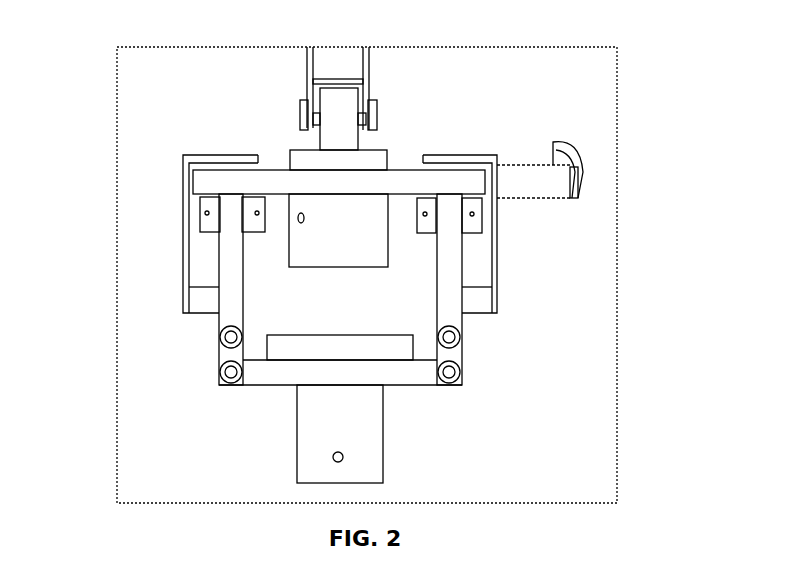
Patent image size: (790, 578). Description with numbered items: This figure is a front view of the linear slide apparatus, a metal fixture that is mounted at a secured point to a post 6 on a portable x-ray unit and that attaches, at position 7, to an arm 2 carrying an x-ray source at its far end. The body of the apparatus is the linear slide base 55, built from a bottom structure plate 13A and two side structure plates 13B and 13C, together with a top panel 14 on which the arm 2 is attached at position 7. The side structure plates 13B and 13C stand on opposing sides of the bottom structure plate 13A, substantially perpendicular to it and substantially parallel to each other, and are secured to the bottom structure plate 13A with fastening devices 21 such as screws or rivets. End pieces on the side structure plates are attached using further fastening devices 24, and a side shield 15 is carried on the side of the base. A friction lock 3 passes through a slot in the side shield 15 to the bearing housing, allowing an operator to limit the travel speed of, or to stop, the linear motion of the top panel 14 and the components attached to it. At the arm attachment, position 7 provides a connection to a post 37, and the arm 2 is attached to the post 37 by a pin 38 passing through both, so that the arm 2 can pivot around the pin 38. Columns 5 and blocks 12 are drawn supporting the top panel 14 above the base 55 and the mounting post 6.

The arm 2 is at (300, 67).
The friction lock 3 is at (593, 176).
The support column 5 is at (213, 238).
The post 6 is at (285, 461).
The position 7 is at (273, 154).
The bearing block 12 is at (189, 213).
The bottom structure plate 13A is at (423, 395).
The side structure plate 13B is at (213, 304).
The side structure plate 13C is at (470, 358).
The top panel 14 is at (242, 175).
The side shield 15 is at (503, 244).
The fastening devices 21 is at (214, 382).
The fastening devices 24 is at (213, 343).
The post 37 is at (370, 138).
The pin 38 is at (385, 103).
The linear slide base 55 is at (396, 410).